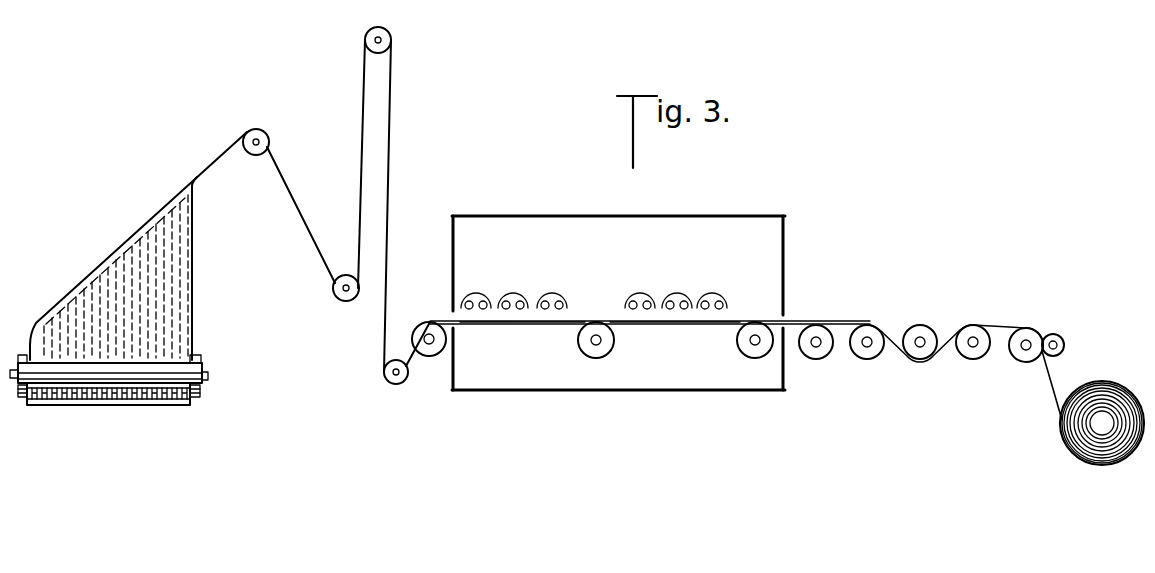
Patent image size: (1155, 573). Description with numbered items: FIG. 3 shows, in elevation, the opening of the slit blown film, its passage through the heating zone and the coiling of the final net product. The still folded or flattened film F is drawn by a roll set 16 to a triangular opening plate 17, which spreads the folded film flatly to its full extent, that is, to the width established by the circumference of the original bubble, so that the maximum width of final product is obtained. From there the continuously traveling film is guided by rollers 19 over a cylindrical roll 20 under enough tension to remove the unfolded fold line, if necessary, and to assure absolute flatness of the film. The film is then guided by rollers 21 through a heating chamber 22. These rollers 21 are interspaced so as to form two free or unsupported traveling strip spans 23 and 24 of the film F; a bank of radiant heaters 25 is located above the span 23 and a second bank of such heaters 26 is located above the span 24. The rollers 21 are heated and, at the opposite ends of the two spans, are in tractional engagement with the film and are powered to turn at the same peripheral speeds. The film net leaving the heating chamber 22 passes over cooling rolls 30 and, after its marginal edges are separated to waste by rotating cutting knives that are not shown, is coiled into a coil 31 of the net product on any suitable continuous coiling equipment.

The roll set 16 is at (190, 370).
The triangular opening plate 17 is at (205, 180).
The rollers 19 is at (268, 135).
The cylindrical roll 20 is at (391, 39).
The rollers 21 is at (430, 350).
The heating chamber 22 is at (645, 213).
The traveling strip span 23 is at (537, 326).
The traveling strip span 24 is at (670, 326).
The bank of radiant heaters 25 is at (515, 295).
The bank of radiant heaters 26 is at (645, 295).
The cooling rolls 30 is at (820, 333).
The coil 31 is at (1102, 392).
The film F is at (793, 318).